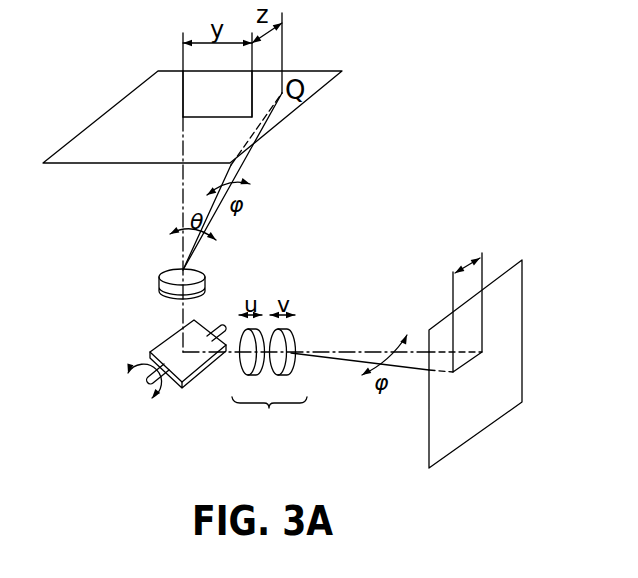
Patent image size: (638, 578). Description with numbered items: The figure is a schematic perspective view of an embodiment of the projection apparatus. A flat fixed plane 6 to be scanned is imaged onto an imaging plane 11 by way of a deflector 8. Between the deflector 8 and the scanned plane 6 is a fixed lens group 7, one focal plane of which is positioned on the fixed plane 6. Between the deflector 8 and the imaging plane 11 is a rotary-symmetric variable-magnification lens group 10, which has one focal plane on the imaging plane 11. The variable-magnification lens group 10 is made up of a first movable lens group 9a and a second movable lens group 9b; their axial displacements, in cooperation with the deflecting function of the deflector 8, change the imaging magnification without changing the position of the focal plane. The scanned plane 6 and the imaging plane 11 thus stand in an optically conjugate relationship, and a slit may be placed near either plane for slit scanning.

The fixed plane to be scanned 6 is at (322, 75).
The fixed lens group 7 is at (161, 278).
The deflector 8 is at (163, 345).
The first movable lens group 9a is at (242, 369).
The second movable lens group 9b is at (295, 368).
The rotary-symmetric variable-magnification lens group 10 is at (269, 418).
The imaging plane 11 is at (500, 412).